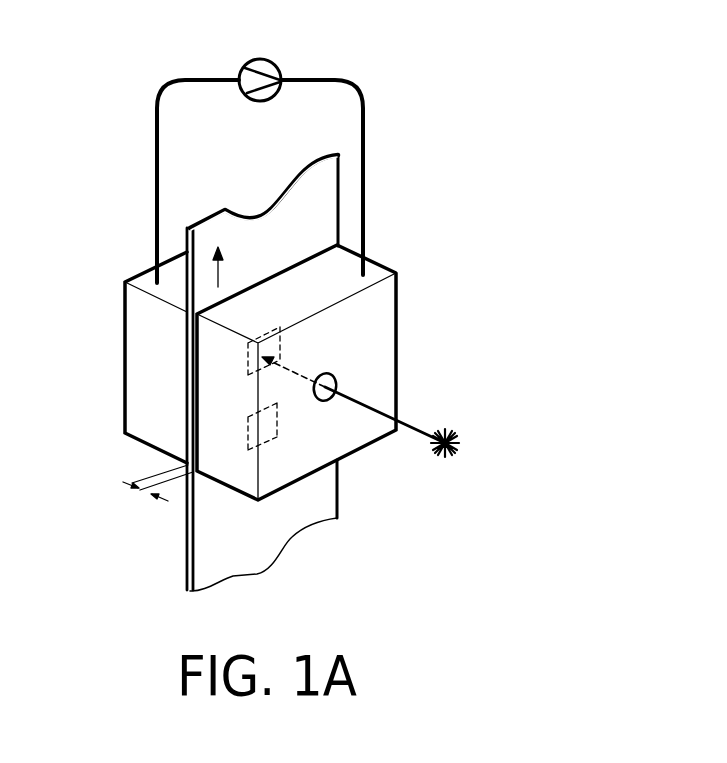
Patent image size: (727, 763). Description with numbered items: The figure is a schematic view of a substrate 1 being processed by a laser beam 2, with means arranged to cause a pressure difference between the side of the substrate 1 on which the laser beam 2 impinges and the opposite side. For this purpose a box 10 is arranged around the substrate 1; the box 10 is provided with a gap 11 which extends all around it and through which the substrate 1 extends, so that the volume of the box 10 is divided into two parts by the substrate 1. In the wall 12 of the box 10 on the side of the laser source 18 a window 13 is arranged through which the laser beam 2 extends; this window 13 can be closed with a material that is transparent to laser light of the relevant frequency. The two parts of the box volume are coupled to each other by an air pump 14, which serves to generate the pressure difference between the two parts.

The substrate 1 is at (258, 233).
The laser beam 2 is at (410, 422).
The box 10 is at (328, 265).
The gap 11 is at (140, 493).
The wall 12 is at (350, 433).
The window 13 is at (339, 372).
The air pump 14 is at (262, 61).
The laser source 18 is at (457, 450).